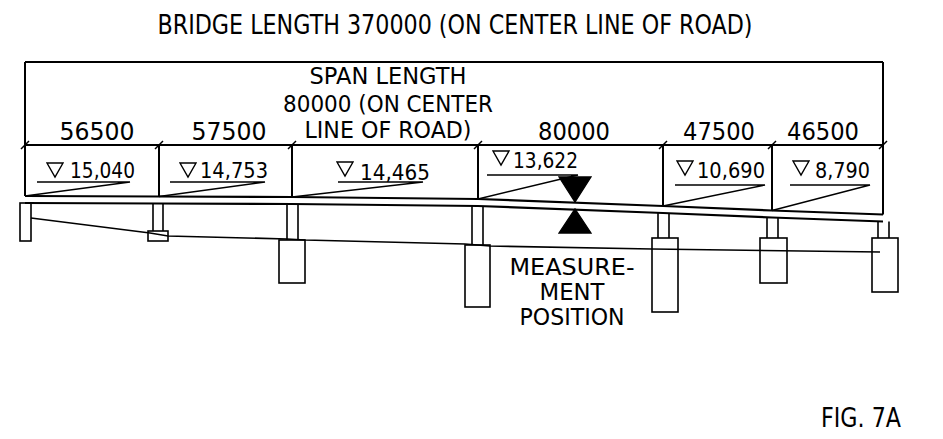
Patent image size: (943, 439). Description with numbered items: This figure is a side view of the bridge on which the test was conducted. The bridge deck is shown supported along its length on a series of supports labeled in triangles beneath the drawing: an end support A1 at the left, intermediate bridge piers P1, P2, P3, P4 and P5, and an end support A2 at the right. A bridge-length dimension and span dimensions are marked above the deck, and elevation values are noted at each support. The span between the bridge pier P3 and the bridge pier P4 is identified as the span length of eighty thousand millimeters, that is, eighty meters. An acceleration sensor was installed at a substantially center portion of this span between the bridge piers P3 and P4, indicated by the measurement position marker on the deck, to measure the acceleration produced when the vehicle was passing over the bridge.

The abutment A1 is at (42, 307).
The pier P1 is at (162, 307).
The pier P2 is at (292, 307).
The bridge pier P3 is at (478, 308).
The bridge pier P4 is at (663, 318).
The pier P5 is at (772, 318).
The abutment A2 is at (883, 318).